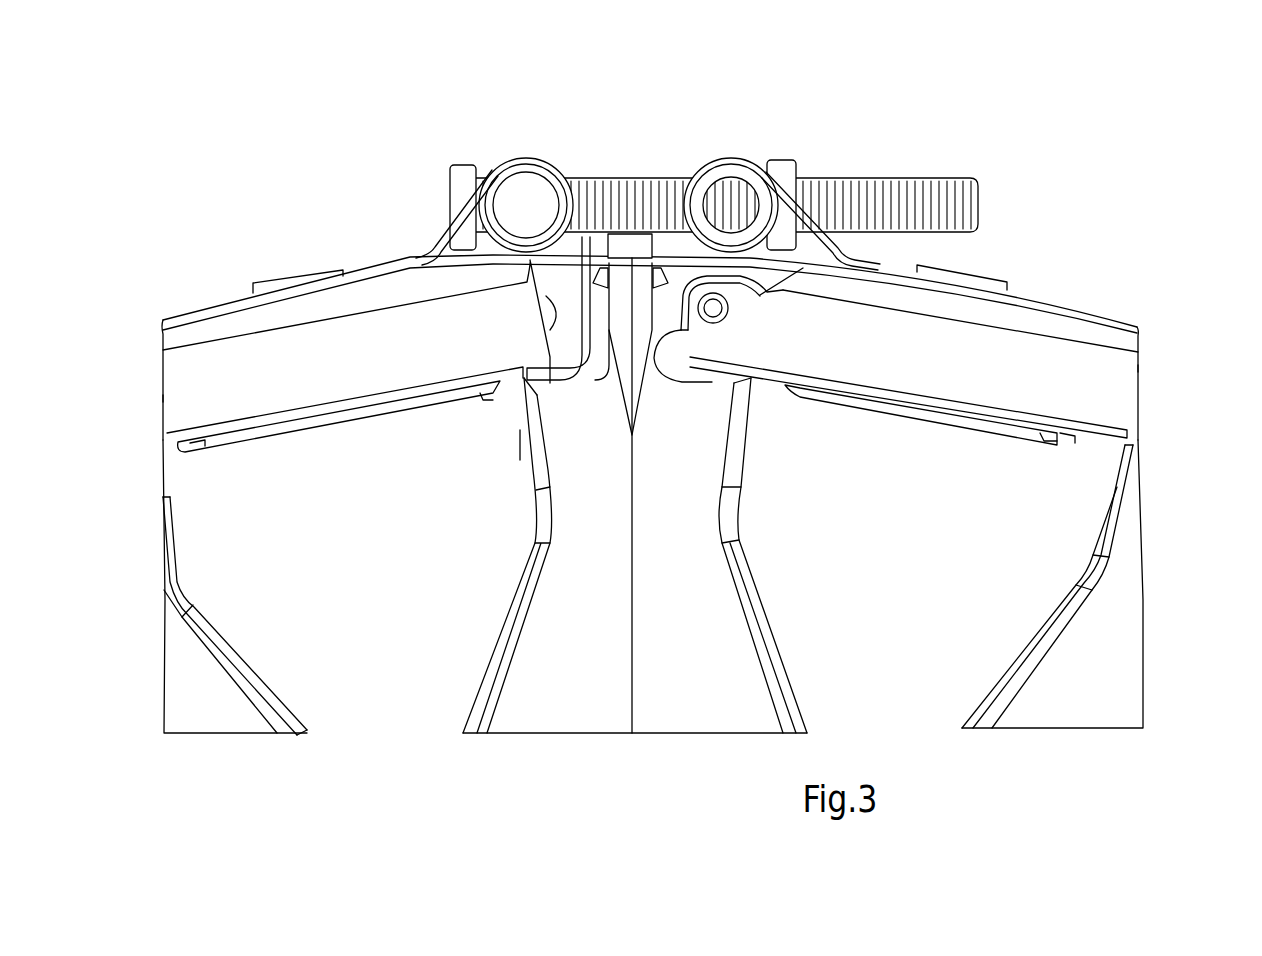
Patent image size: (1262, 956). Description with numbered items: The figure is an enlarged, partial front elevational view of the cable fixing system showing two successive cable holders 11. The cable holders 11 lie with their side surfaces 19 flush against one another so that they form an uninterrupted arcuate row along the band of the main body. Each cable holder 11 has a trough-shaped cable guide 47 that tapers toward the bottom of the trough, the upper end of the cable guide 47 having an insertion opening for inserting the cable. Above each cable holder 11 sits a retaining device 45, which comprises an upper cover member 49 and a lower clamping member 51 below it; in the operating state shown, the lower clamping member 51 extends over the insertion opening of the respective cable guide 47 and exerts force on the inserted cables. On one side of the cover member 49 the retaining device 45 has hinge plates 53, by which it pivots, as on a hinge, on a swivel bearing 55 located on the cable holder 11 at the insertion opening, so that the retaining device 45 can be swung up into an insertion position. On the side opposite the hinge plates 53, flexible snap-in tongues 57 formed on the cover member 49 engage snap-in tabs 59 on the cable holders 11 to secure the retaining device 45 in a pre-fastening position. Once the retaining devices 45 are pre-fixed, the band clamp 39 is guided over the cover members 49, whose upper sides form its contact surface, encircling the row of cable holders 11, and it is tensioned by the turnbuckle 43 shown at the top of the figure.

The cable holder 11 is at (205, 703).
The side surface 19 is at (635, 627).
The band clamp 39 is at (244, 294).
The turnbuckle 43 is at (858, 153).
The retaining device 45 is at (163, 399).
The cable guide 47 is at (245, 659).
The cover member 49 is at (308, 322).
The lower clamping member 51 is at (340, 415).
The hinge plate 53 is at (662, 312).
The swivel bearing 55 is at (632, 435).
The snap-in tongue 57 is at (595, 262).
The snap-in tab 59 is at (663, 278).